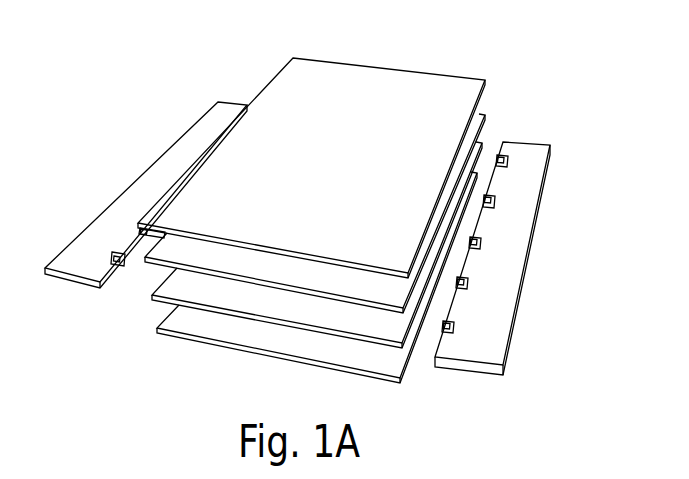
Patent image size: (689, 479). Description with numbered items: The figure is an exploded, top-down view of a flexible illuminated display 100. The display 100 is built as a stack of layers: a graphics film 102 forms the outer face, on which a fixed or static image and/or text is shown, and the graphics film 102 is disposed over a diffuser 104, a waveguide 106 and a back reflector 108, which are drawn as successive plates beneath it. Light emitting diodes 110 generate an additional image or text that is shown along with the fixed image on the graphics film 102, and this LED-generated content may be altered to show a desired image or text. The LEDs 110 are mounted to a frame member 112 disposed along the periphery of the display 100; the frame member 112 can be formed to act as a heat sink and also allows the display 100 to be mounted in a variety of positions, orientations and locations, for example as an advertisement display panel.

The display 100 is at (253, 59).
The graphics film 102 is at (470, 84).
The diffuser 104 is at (478, 113).
The waveguide 106 is at (167, 288).
The back reflector 108 is at (192, 330).
The light emitting diodes 110 is at (112, 258).
The frame member 112 is at (533, 301).